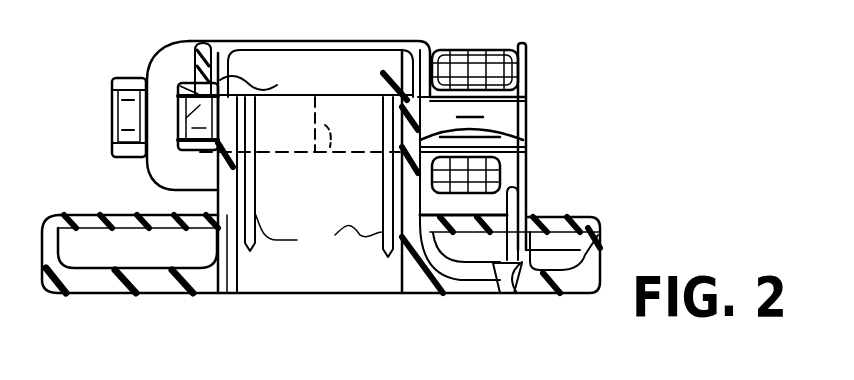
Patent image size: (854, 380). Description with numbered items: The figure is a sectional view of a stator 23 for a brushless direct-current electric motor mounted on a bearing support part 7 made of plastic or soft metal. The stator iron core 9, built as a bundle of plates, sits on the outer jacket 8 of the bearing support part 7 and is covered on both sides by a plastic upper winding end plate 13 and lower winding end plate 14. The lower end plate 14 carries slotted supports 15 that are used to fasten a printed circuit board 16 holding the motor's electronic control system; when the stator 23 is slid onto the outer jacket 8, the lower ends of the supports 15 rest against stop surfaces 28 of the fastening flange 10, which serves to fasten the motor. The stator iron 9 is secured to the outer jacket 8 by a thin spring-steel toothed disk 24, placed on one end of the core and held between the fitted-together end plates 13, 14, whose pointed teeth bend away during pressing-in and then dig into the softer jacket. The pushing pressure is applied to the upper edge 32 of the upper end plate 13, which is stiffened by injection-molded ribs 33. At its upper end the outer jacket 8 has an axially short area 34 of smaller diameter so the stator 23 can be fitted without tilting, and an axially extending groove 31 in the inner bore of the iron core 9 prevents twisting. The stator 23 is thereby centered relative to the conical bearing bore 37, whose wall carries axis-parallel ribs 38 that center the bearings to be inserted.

The bearing support part 7 is at (230, 292).
The outer jacket 8 is at (527, 128).
The iron core 9 is at (147, 68).
The fastening flange 10 is at (100, 275).
The upper winding end plate 13 is at (200, 42).
The lower winding end plate 14 is at (158, 176).
The slotted supports 15 is at (518, 192).
The printed circuit board 16 is at (568, 217).
The stator 23 is at (526, 40).
The toothed disk 24 is at (255, 88).
The stop surfaces 28 is at (517, 265).
The axially extending groove 31 is at (321, 158).
The upper edge 32 is at (277, 38).
The ribs 33 is at (211, 47).
The axially short area of smaller diameter 34 is at (467, 50).
The bearing bore 37 is at (245, 270).
The ribs 38 is at (349, 171).